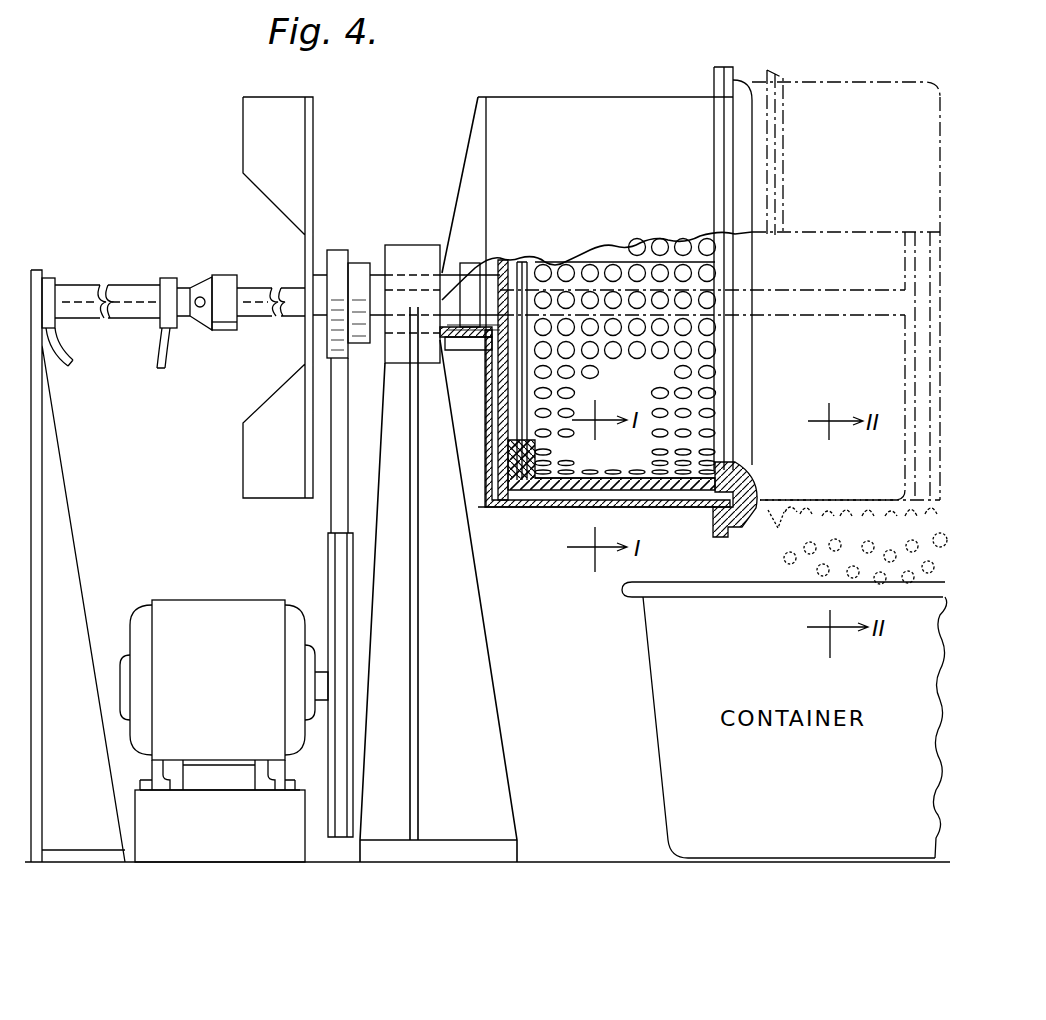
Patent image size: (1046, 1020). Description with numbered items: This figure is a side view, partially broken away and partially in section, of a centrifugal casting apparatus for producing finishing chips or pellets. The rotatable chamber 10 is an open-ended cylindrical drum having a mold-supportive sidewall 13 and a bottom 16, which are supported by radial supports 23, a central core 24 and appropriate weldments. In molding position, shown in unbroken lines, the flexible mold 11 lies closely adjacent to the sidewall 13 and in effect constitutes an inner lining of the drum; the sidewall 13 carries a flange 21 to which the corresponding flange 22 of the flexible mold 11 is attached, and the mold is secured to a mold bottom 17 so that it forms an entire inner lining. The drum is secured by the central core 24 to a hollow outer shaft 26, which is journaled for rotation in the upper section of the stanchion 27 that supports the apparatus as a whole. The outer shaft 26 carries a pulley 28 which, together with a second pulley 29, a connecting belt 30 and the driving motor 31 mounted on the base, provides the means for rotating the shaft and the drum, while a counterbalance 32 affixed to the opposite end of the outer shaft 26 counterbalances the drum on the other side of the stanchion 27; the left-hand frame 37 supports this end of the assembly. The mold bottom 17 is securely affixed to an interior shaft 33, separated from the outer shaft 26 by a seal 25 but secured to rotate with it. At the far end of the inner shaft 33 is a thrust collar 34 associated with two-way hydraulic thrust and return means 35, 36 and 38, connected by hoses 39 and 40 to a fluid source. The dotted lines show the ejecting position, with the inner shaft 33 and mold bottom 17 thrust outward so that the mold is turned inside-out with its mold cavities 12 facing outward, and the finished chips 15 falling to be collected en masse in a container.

The rotatable chamber 10 is at (516, 66).
The flexible mold 11 is at (606, 478).
The mold cavities 12 is at (660, 352).
The sidewall 13 is at (580, 97).
The finished chips 15 is at (790, 548).
The bottom 16 is at (486, 392).
The mold bottom 17 is at (510, 406).
The flange 21 is at (714, 78).
The flange 22 is at (736, 68).
The radial supports 23 is at (466, 168).
The central core 24 is at (455, 267).
The seal 25 is at (465, 283).
The hollow outer shaft 26 is at (376, 275).
The stanchion 27 is at (470, 741).
The pulley 28 is at (357, 250).
The pulley 29 is at (327, 558).
The connecting belt 30 is at (332, 505).
The motor 31 is at (230, 657).
The counterbalance 32 is at (250, 131).
The interior shaft 33 is at (256, 293).
The thrust collar 34 is at (220, 276).
The hydraulic thrust and return means 35 is at (165, 278).
The hydraulic thrust and return means 36 is at (52, 278).
The frame 37 is at (85, 757).
The hydraulic thrust and return means 38 is at (82, 290).
The hose 39 is at (172, 355).
The hose 40 is at (72, 351).